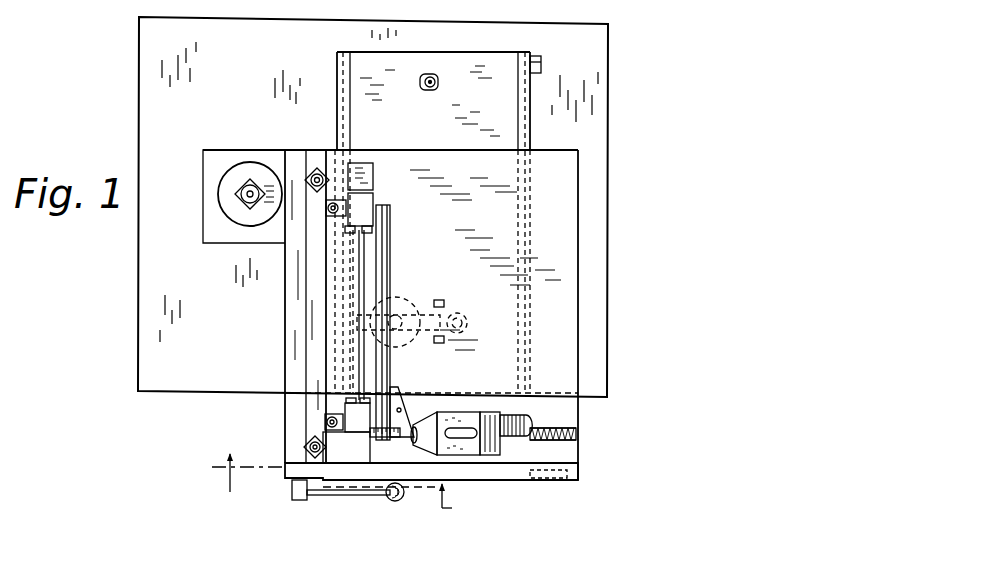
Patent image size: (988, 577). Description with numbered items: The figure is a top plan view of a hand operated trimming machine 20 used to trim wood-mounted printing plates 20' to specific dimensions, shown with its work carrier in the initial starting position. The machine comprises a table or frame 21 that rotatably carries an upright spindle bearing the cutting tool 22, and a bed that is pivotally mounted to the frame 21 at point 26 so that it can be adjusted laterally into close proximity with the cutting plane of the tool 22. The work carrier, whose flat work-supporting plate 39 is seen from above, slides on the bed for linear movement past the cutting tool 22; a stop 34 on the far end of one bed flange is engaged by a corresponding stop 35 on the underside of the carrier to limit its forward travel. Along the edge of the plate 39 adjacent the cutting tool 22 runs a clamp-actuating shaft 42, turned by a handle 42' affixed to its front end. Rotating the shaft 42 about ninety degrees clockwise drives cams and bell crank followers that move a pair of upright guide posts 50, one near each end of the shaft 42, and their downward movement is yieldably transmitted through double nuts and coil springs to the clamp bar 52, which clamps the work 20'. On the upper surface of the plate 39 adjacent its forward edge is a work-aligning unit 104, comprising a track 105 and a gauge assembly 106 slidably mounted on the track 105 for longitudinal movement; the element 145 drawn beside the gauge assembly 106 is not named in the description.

The hand operated trimming machine 20 is at (413, 297).
The table or frame 21 is at (608, 200).
The cutting tool 22 is at (215, 178).
The pivot point 26 is at (430, 76).
The stop 34 is at (541, 64).
The work-supporting plate 39 is at (562, 300).
The clamp bar 52 is at (318, 340).
The guide post 50 is at (306, 447).
The wood-mounted printing plate 20' is at (399, 402).
The gauge assembly 106 is at (470, 412).
The work-aligning unit 104 is at (545, 417).
The threaded screw 145 is at (578, 433).
The track 105 is at (575, 442).
The stop 35 is at (548, 480).
The clamp-actuating shaft 42 is at (282, 504).
The handle 42' is at (355, 506).